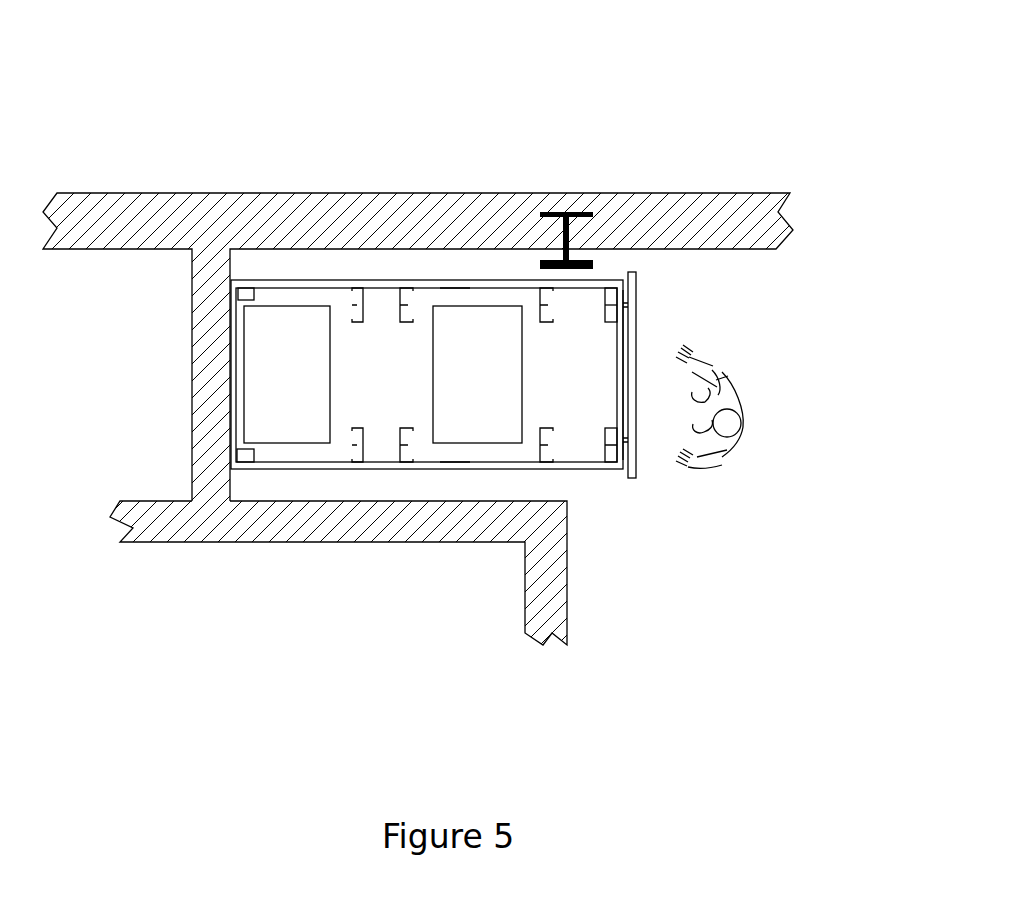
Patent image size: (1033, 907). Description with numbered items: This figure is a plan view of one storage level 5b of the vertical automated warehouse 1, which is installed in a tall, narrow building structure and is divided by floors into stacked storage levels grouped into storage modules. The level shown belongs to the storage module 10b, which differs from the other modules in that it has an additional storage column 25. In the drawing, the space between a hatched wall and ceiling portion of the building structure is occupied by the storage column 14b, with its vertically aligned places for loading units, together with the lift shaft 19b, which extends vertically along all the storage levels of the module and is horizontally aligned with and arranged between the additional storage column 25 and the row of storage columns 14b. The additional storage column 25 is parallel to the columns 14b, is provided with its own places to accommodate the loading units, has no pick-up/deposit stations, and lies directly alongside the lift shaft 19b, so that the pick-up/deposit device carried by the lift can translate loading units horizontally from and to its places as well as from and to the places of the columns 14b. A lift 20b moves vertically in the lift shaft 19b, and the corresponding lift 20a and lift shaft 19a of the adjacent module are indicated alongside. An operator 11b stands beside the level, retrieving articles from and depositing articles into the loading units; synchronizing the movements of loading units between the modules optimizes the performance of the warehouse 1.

The vertical automated warehouse 1 is at (677, 104).
The storage level 5b is at (745, 283).
The storage module 10b is at (365, 506).
The operator 11b is at (736, 443).
The storage column 14b is at (608, 284).
The lift shaft 19a is at (270, 299).
The lift shaft 19b is at (457, 300).
The lift 20a is at (278, 422).
The lift 20b is at (470, 422).
The additional storage column 25 is at (368, 311).